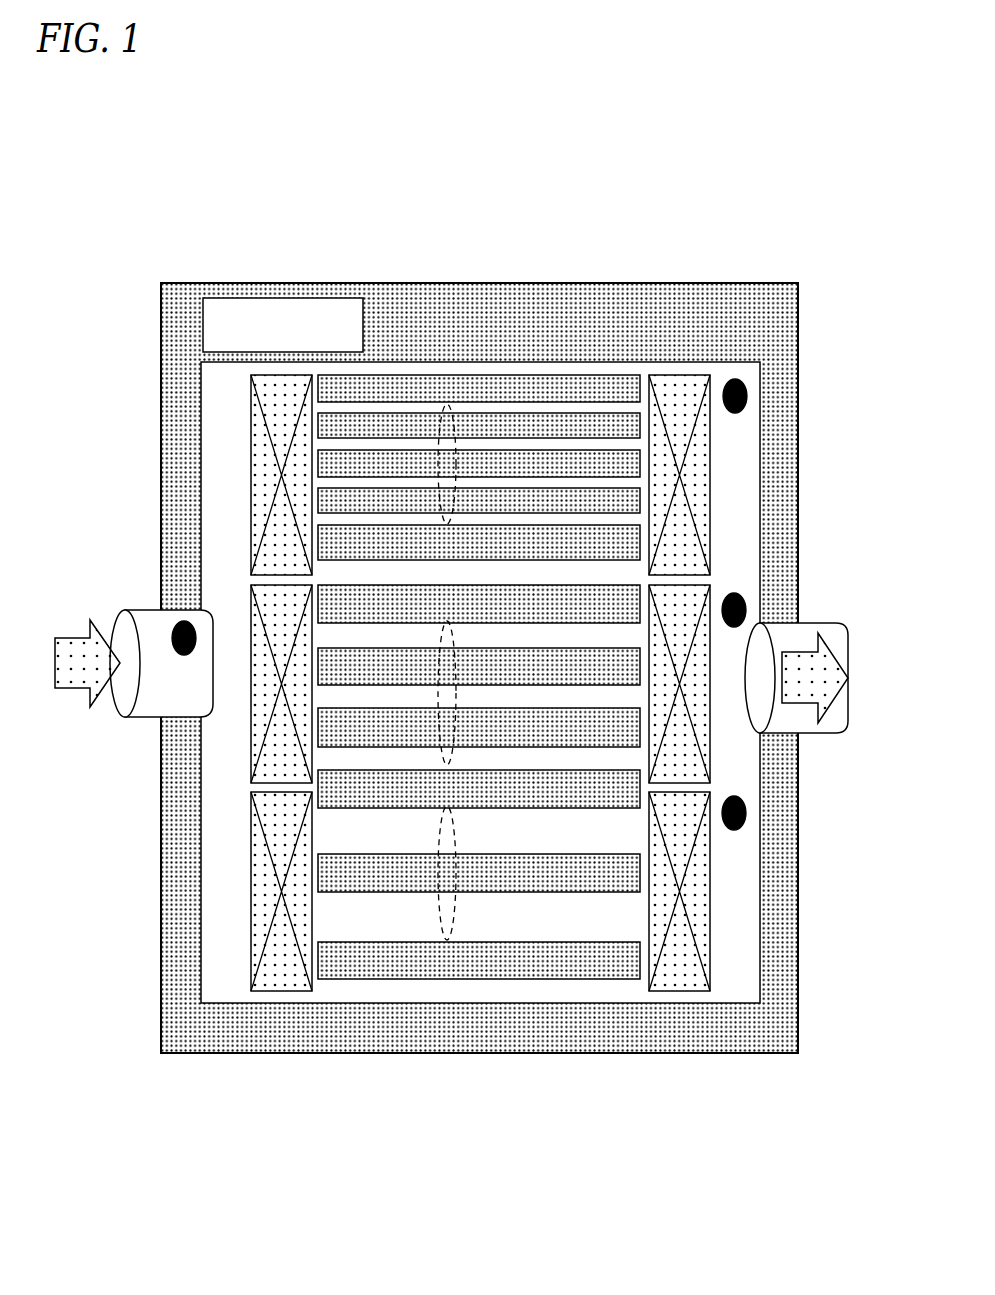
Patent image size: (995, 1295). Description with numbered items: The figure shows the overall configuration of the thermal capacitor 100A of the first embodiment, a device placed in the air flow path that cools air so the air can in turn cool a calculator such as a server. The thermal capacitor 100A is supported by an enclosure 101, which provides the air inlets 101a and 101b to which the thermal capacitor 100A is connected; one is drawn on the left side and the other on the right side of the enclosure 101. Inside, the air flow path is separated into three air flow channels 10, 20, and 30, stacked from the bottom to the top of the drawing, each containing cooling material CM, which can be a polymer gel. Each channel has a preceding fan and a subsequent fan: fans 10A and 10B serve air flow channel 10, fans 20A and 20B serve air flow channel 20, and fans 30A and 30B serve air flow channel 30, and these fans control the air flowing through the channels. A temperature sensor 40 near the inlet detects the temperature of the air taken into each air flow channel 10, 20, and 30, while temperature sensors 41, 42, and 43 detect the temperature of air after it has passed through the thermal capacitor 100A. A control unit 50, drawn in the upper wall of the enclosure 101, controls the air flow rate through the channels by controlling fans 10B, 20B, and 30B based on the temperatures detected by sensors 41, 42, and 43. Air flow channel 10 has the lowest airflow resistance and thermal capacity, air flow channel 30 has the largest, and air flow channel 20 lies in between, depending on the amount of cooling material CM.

The thermal capacitor 100A is at (757, 241).
The enclosure 101 is at (545, 283).
The air inlet 101a is at (123, 717).
The air inlet 101b is at (864, 619).
The control unit 50 is at (268, 297).
The cooling material CM is at (586, 385).
The air flow channel 10 is at (443, 916).
The air flow fan 10A is at (250, 880).
The air flow fan 10B is at (710, 918).
The air flow channel 20 is at (443, 753).
The air flow fan 20A is at (250, 611).
The air flow fan 20B is at (709, 765).
The air flow channel 30 is at (440, 497).
The air flow fan 30A is at (250, 444).
The air flow fan 30B is at (710, 493).
The temperature sensor 40 is at (173, 638).
The temperature sensor 41 is at (746, 813).
The temperature sensor 42 is at (746, 610).
The temperature sensor 43 is at (747, 396).